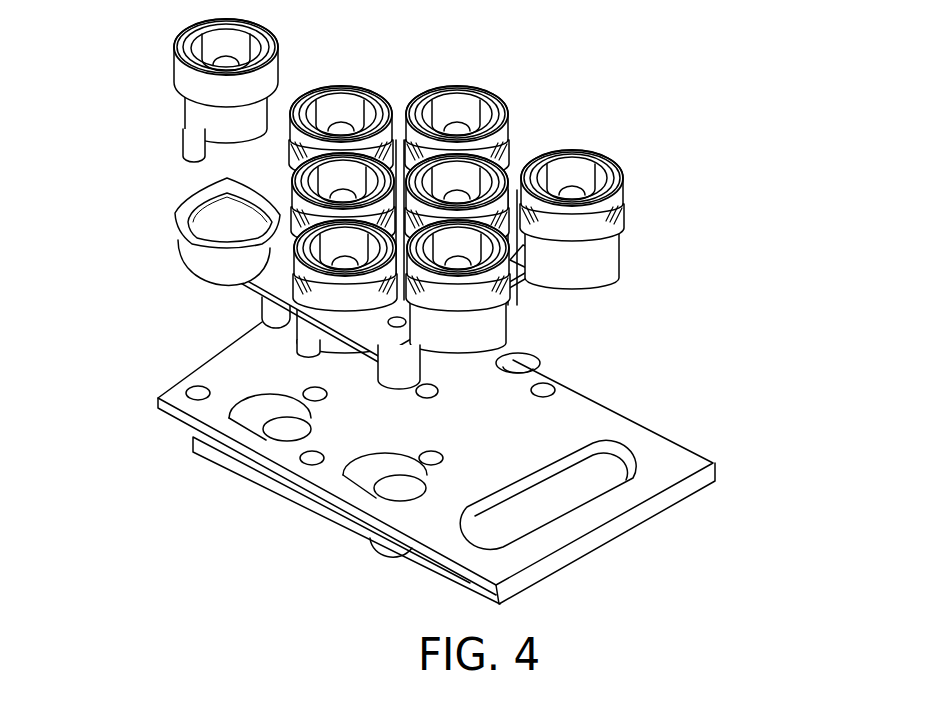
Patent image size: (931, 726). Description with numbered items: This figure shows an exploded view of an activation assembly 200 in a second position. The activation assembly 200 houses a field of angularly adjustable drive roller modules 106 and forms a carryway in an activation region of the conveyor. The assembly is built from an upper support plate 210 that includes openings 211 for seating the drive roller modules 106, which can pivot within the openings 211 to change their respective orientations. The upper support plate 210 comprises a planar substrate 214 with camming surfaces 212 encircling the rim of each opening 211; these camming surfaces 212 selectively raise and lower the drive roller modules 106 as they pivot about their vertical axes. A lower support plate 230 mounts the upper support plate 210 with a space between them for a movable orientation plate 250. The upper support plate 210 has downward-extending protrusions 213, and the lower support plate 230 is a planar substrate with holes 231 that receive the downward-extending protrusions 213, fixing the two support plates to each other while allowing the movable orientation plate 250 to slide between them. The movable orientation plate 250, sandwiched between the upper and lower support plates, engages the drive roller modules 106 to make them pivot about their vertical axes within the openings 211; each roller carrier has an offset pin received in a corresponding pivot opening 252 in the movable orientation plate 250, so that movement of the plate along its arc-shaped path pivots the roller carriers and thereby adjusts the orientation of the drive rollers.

The drive roller module 106 is at (326, 314).
The activation assembly 200 is at (414, 320).
The upper support plate 210 is at (520, 152).
The opening 211 is at (180, 229).
The camming surface 212 is at (180, 205).
The downward-extending protrusion 213 is at (260, 303).
The planar substrate 214 is at (537, 255).
The lower support plate 230 is at (237, 478).
The hole 231 is at (517, 350).
The movable orientation plate 250 is at (643, 423).
The pivot opening 252 is at (552, 378).